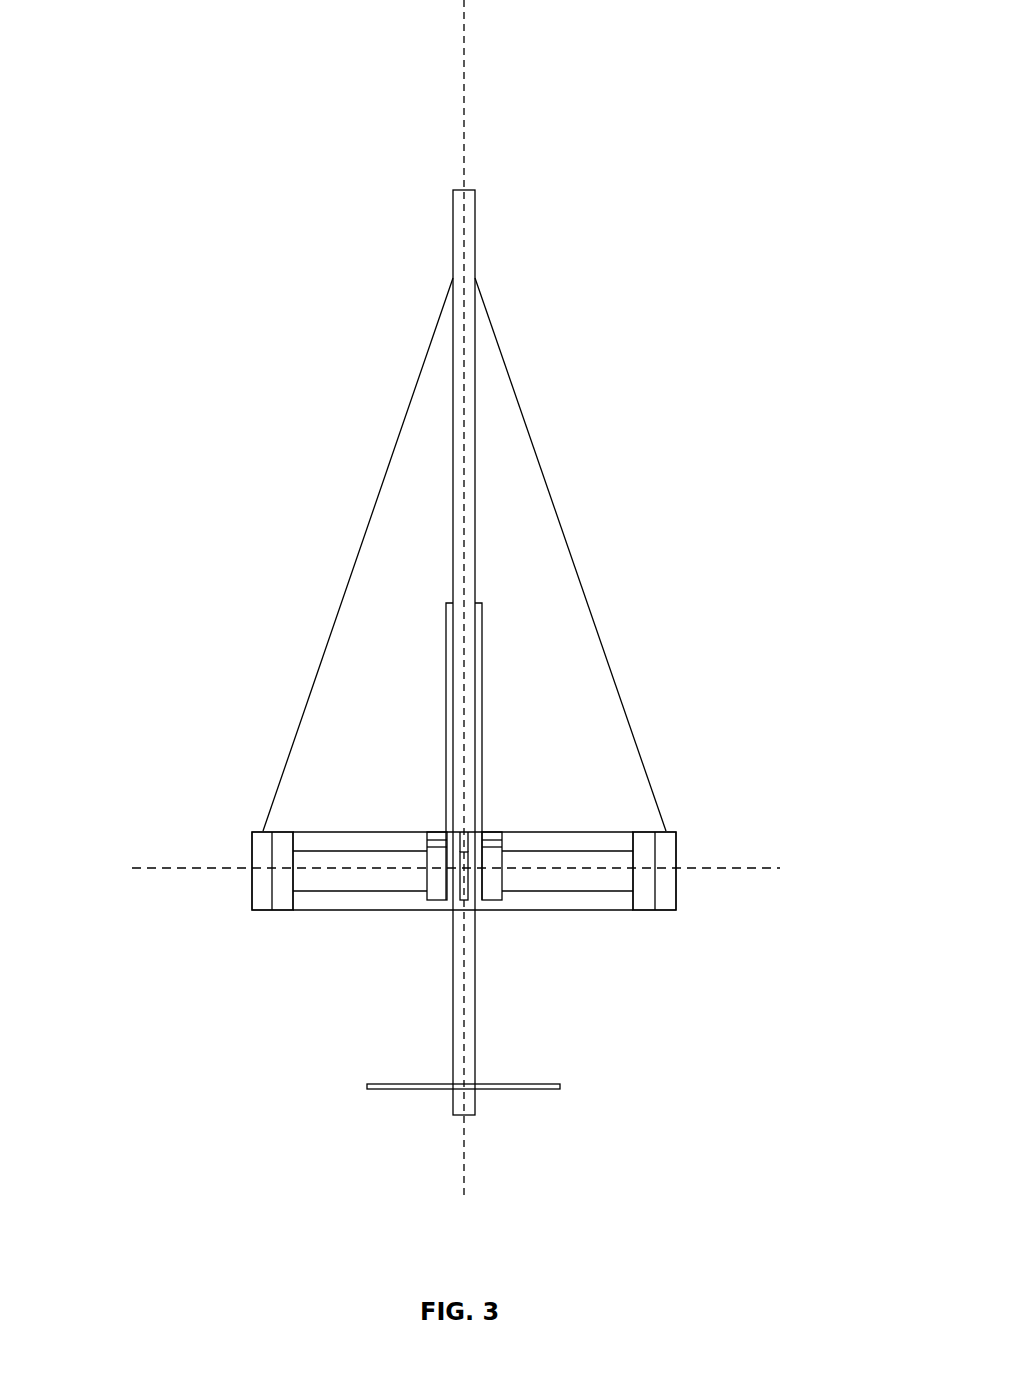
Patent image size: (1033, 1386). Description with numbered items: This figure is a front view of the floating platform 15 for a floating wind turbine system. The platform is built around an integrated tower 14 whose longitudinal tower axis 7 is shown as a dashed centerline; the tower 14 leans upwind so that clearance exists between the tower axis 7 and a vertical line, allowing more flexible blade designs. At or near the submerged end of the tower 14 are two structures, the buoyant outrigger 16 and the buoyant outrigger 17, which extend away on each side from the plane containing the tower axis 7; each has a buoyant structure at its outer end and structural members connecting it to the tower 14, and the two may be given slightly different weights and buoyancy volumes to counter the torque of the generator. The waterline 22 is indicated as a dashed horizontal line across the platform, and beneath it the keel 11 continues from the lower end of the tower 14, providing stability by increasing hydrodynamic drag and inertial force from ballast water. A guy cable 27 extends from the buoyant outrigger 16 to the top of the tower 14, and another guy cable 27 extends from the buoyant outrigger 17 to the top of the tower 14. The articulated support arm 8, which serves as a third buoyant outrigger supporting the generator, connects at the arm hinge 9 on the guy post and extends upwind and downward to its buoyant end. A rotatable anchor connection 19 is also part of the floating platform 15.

The longitudinal tower axis 7 is at (472, 20).
The articulated support arm 8 is at (440, 795).
The arm hinge 9 is at (442, 607).
The keel 11 is at (380, 1127).
The tower 14 is at (433, 215).
The floating platform 15 is at (595, 140).
The buoyant outrigger 16 is at (273, 932).
The buoyant outrigger 17 is at (637, 933).
The rotatable anchor connection 19 is at (467, 897).
The waterline 22 is at (147, 860).
The guy cable 27 is at (360, 512).